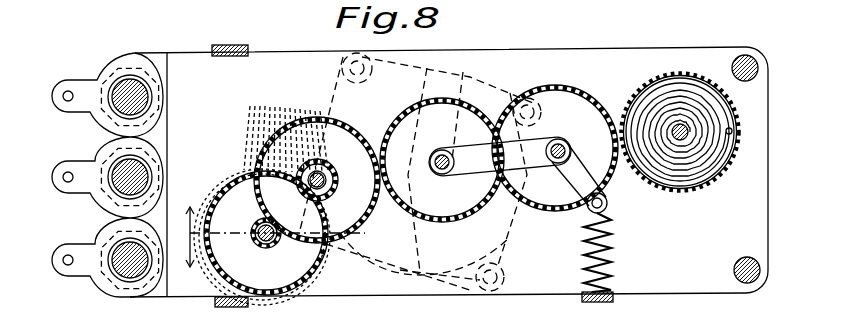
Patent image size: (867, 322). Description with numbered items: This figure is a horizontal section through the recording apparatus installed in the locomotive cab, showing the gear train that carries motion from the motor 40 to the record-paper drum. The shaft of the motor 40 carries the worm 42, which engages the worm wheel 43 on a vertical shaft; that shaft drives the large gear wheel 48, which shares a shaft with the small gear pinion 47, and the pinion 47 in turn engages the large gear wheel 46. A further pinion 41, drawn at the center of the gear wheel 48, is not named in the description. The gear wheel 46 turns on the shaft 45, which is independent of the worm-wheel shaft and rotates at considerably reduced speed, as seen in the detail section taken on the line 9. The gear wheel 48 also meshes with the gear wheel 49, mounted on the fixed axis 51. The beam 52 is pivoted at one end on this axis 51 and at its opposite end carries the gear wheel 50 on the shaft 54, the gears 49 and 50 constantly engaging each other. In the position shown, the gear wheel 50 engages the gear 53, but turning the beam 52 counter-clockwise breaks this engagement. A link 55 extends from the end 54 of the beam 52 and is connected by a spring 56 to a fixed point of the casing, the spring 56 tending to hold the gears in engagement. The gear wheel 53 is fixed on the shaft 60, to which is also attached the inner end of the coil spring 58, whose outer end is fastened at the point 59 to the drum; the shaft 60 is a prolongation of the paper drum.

The section line 9 is at (183, 237).
The motor 40 is at (514, 253).
The pinion 41 is at (325, 176).
The worm 42 is at (265, 108).
The worm wheel 43 is at (222, 178).
The shaft 45 is at (263, 243).
The large gear wheel 46 is at (217, 262).
The small gear pinion 47 is at (291, 246).
The large gear wheel 48 is at (345, 228).
The gear wheel 49 is at (468, 220).
The gear wheel 50 is at (575, 91).
The fixed axis 51 is at (442, 175).
The beam 52 is at (460, 156).
The gear wheel 53 is at (665, 192).
The shaft 54 is at (563, 146).
The link 55 is at (576, 163).
The spring 56 is at (603, 250).
The coil spring 58 is at (705, 190).
The attachment point 59 is at (733, 130).
The shaft 60 is at (689, 140).